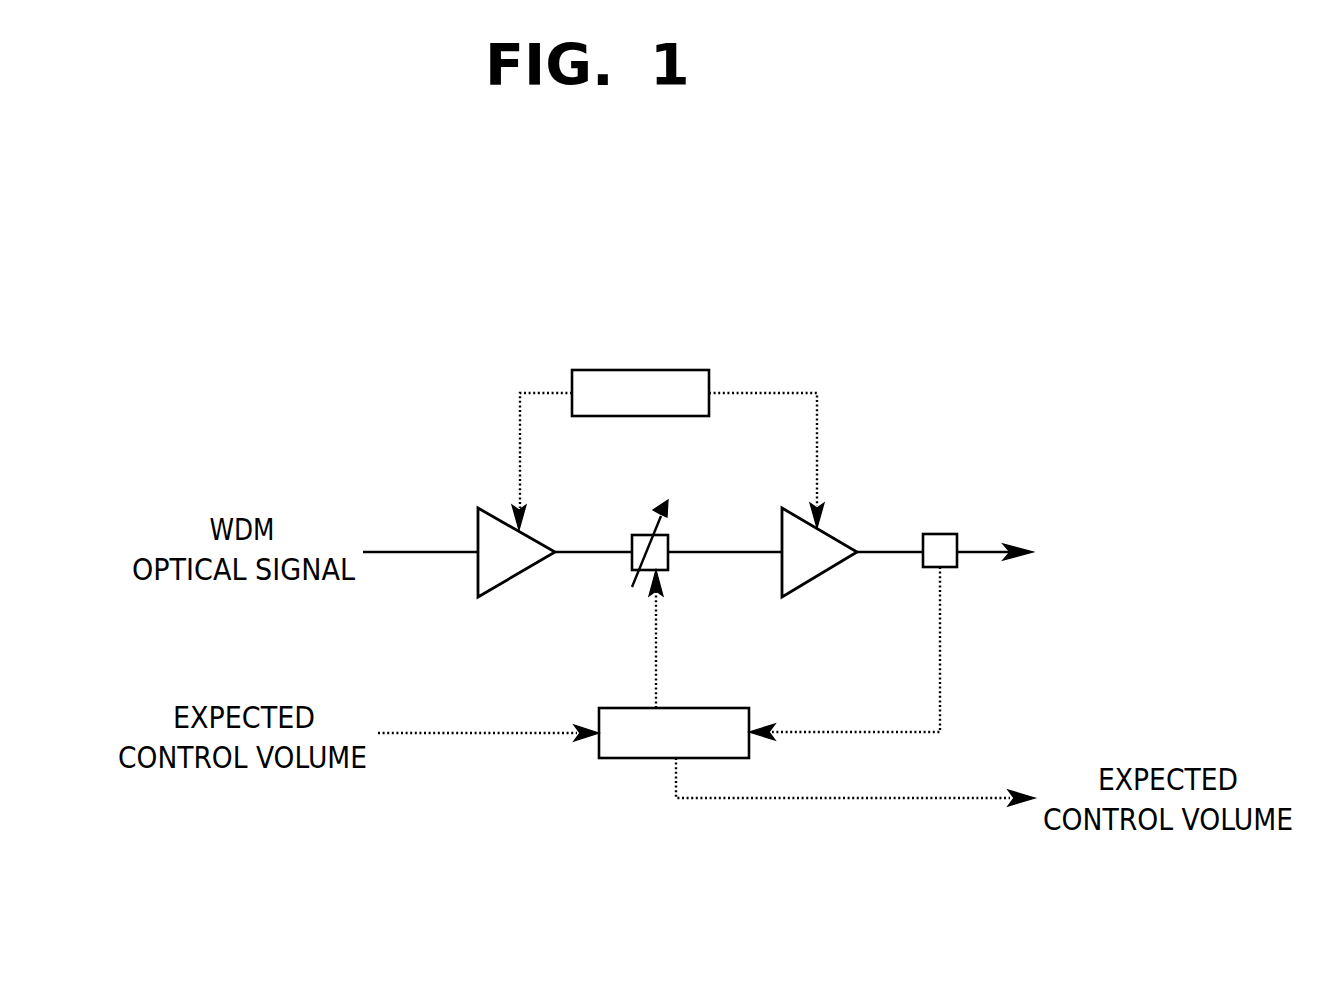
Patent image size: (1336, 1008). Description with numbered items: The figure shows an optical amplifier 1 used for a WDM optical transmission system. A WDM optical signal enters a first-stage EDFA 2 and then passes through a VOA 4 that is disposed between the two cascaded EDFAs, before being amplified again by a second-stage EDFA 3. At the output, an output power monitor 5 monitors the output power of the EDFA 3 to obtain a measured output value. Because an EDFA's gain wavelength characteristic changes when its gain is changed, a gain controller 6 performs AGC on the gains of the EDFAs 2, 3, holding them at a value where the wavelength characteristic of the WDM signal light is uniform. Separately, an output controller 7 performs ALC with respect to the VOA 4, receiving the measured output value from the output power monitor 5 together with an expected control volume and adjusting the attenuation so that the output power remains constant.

The optical amplifier 1 is at (460, 370).
The EDFA 2 is at (515, 577).
The EDFA 3 is at (818, 577).
The VOA 4 is at (670, 565).
The output power monitor 5 is at (937, 534).
The gain controller 6 is at (676, 370).
The output controller 7 is at (613, 758).